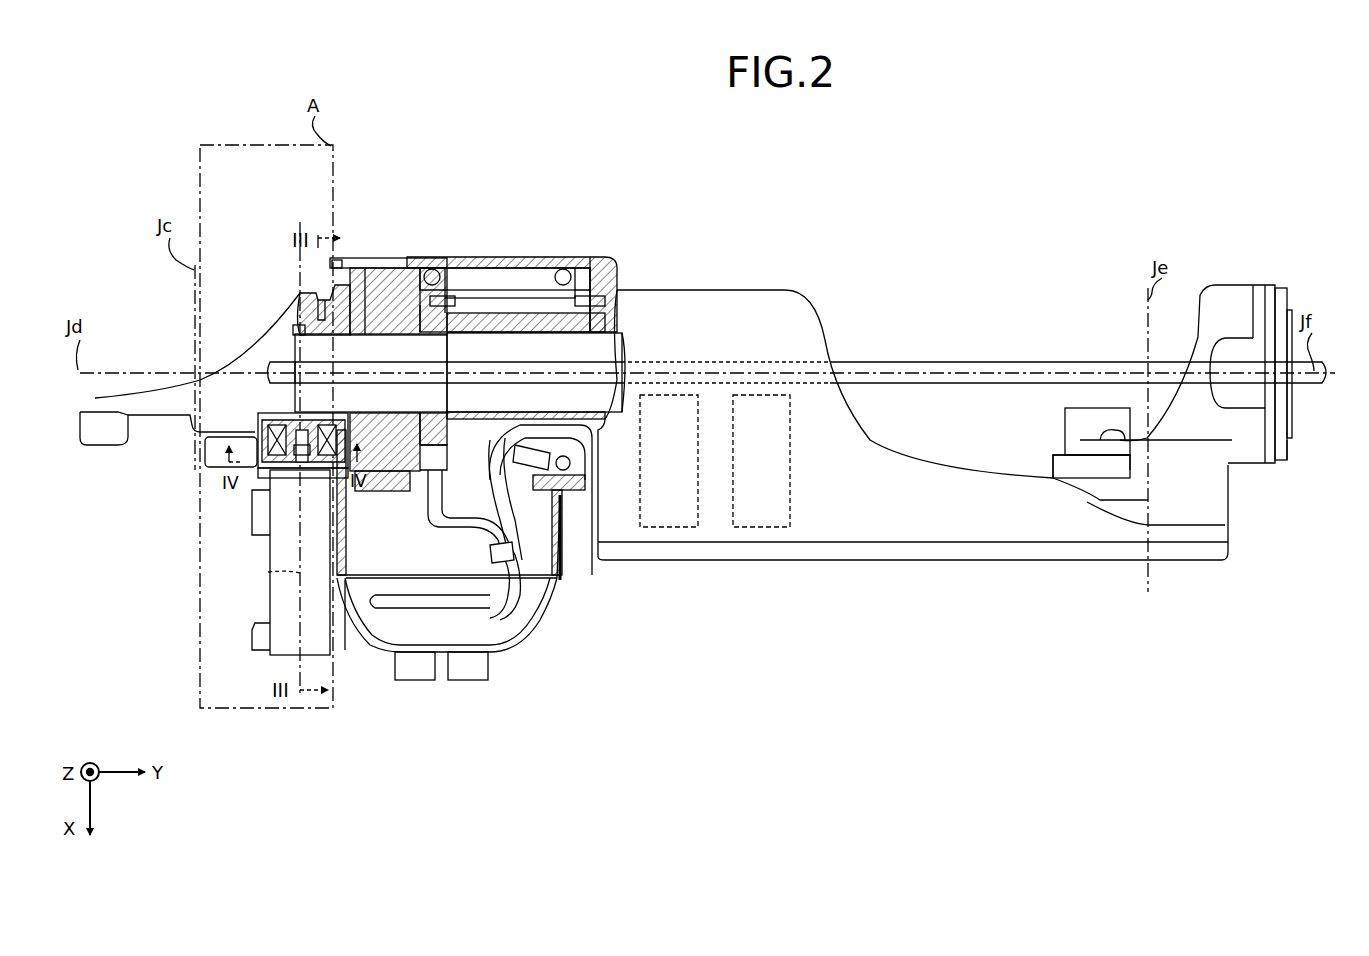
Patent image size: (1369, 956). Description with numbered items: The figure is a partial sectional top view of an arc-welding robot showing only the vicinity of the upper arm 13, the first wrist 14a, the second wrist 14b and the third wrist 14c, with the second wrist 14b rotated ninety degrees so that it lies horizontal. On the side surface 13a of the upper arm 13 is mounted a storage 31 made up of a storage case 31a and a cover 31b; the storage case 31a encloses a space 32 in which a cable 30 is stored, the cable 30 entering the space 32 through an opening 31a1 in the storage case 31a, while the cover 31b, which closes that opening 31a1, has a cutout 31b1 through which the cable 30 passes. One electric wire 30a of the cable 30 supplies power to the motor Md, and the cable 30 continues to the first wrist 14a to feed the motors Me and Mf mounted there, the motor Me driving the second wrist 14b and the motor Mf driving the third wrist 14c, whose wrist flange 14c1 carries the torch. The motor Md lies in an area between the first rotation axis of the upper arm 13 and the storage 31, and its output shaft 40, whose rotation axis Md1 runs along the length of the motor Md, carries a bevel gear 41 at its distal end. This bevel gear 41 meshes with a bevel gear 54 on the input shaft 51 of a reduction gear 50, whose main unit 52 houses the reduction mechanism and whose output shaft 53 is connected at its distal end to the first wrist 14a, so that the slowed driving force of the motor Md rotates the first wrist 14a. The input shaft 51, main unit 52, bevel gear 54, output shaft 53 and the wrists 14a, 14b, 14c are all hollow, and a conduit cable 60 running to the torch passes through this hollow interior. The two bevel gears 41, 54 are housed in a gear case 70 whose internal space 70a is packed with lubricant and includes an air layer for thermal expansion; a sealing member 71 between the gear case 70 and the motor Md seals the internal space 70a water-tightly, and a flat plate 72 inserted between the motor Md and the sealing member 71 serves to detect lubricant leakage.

The upper arm 13 is at (508, 257).
The side surface of the upper arm 13a is at (575, 500).
The first wrist 14a is at (780, 290).
The second wrist 14b is at (1230, 285).
The third wrist 14c is at (1278, 280).
The wrist flange 14c1 is at (1288, 460).
The cable 30 is at (445, 600).
The electric wire 30a is at (440, 528).
The storage 31 is at (547, 604).
The storage case 31a is at (567, 560).
The opening 31a1 is at (522, 625).
The cover 31b is at (498, 652).
The cutout 31b1 is at (368, 640).
The space 32 is at (557, 578).
The output shaft of the motor 40 is at (280, 423).
The bevel gear 41 is at (292, 420).
The reduction gear 50 is at (430, 257).
The input shaft 51 is at (343, 258).
The main unit 52 is at (385, 268).
The output shaft of the reduction gear 53 is at (475, 318).
The bevel gear 54 is at (303, 293).
The conduit cable 60 is at (548, 362).
The gear case 70 is at (258, 432).
The internal space 70a is at (268, 425).
The sealing member 71 is at (257, 432).
The flat plate 72 is at (255, 468).
The motor Md is at (268, 600).
The rotation axis Md1 is at (268, 572).
The motor Me is at (758, 527).
The motor Mf is at (665, 527).